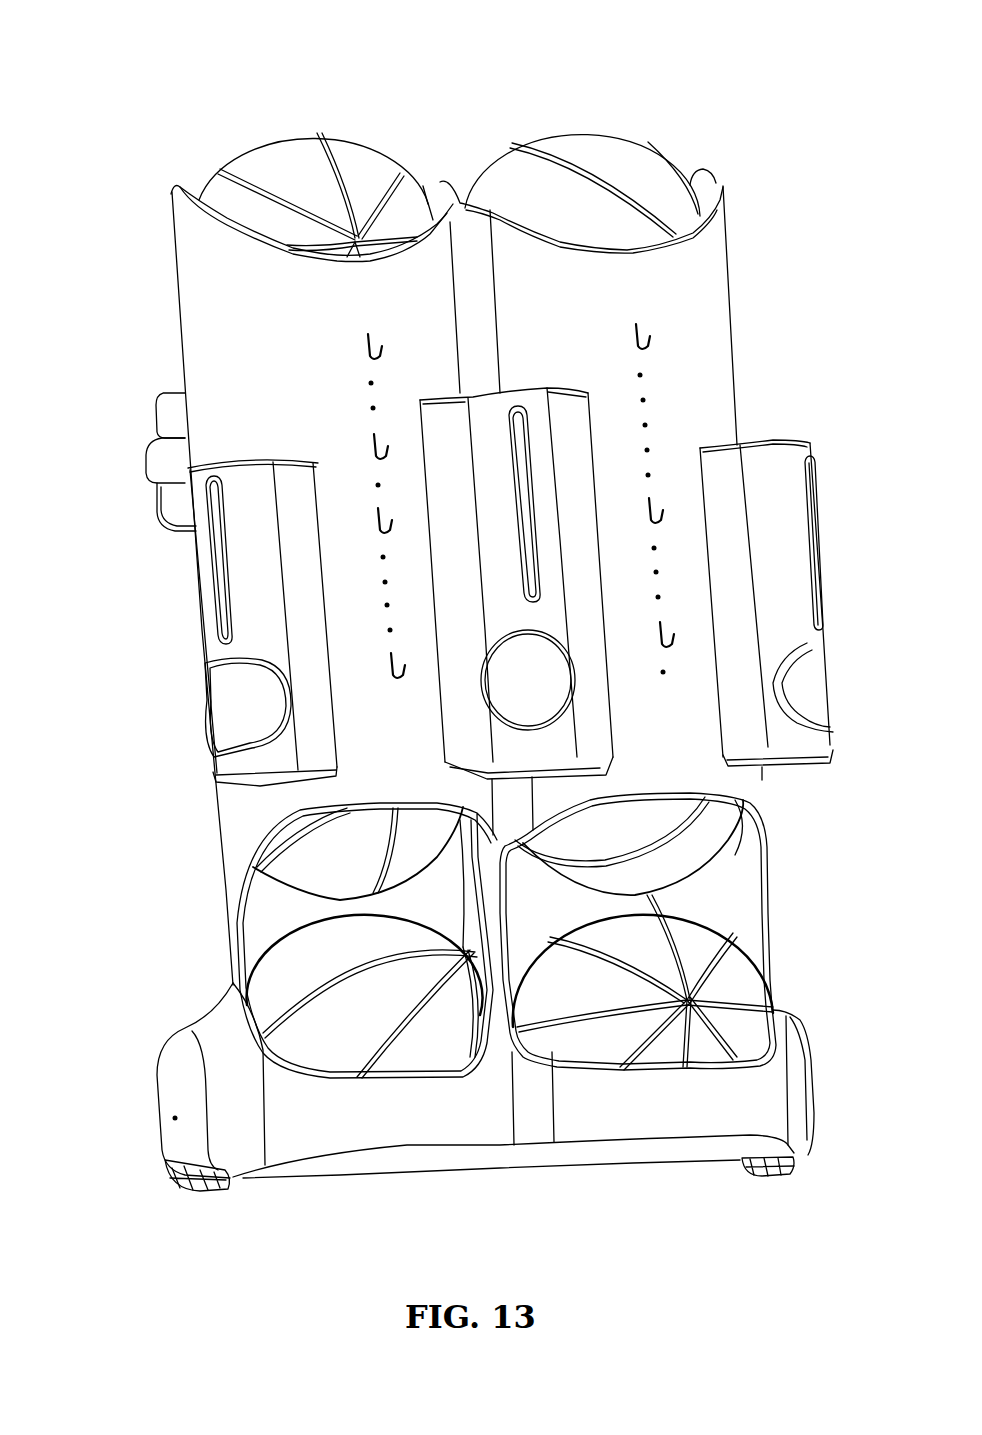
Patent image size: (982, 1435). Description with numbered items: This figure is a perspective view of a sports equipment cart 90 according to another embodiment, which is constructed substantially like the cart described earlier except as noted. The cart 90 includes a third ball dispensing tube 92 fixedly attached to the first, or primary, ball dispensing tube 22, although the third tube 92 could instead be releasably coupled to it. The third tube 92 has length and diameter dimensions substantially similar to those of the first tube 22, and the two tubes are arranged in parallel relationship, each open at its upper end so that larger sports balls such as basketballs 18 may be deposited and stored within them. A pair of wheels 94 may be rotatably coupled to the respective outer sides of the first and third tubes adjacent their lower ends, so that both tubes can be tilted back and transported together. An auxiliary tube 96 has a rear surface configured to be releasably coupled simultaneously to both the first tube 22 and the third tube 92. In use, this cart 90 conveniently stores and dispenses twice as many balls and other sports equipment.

The basketballs 18 is at (287, 131).
The first/primary ball dispensing tube 22 is at (160, 261).
The sports equipment cart 90 is at (481, 93).
The third ball dispensing tube 92 is at (755, 264).
The pair of wheels 94 is at (188, 1194).
The auxiliary tube 96 is at (519, 390).